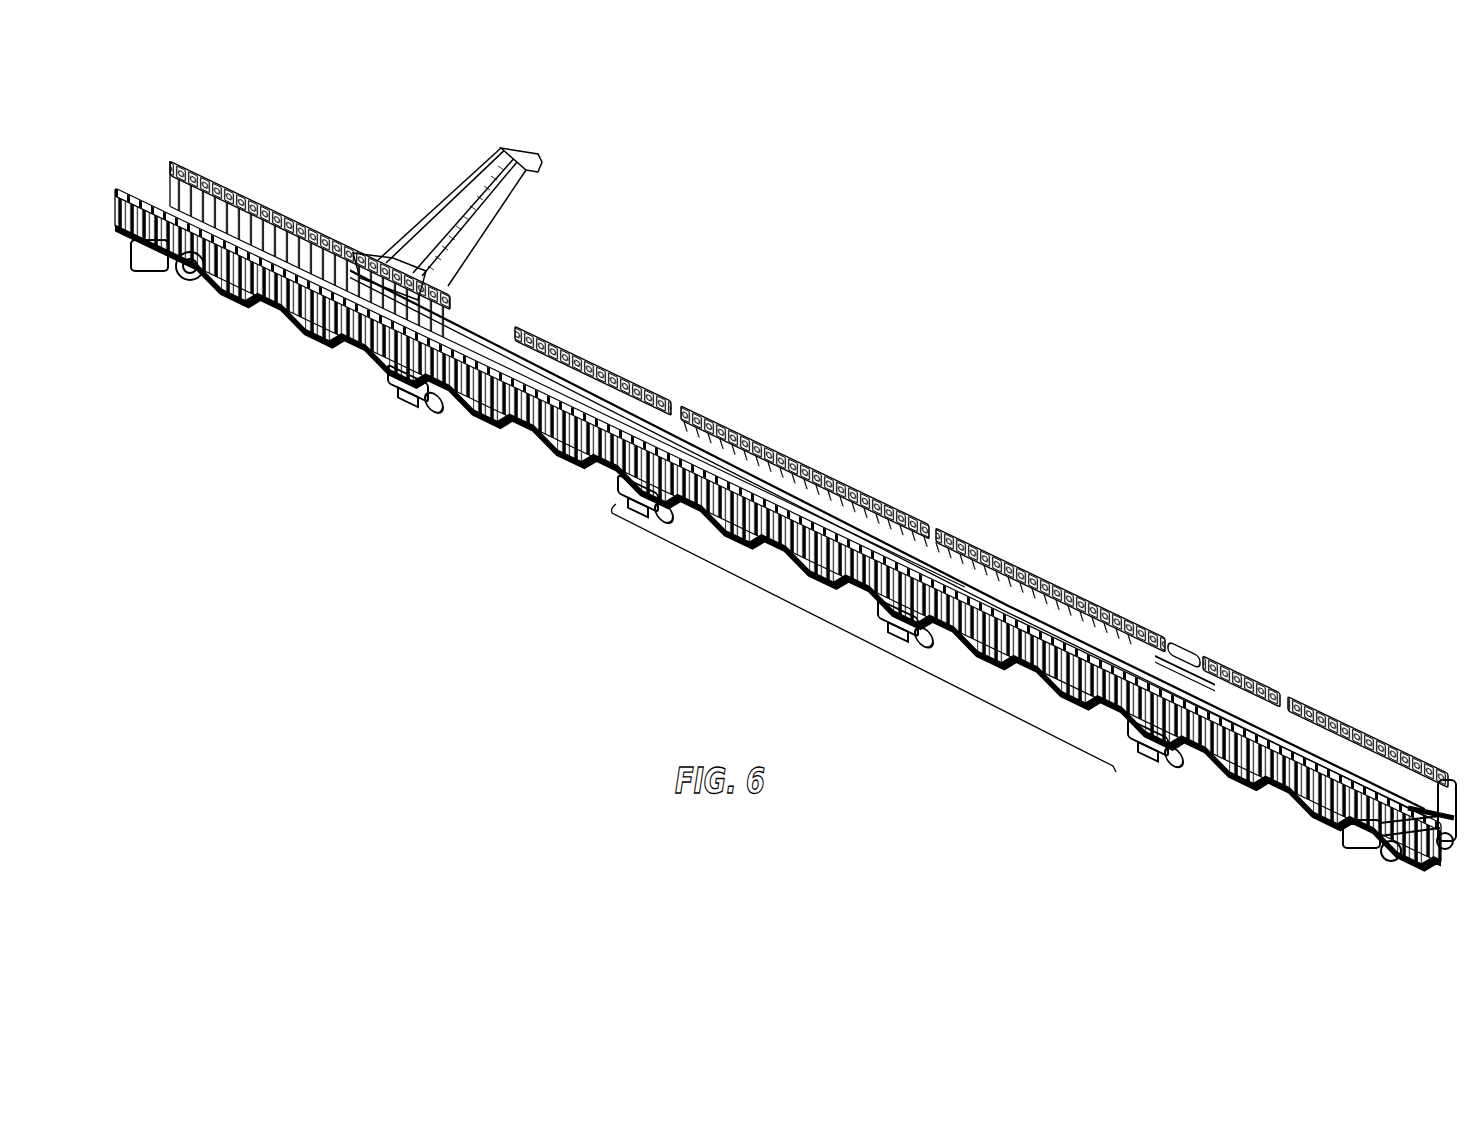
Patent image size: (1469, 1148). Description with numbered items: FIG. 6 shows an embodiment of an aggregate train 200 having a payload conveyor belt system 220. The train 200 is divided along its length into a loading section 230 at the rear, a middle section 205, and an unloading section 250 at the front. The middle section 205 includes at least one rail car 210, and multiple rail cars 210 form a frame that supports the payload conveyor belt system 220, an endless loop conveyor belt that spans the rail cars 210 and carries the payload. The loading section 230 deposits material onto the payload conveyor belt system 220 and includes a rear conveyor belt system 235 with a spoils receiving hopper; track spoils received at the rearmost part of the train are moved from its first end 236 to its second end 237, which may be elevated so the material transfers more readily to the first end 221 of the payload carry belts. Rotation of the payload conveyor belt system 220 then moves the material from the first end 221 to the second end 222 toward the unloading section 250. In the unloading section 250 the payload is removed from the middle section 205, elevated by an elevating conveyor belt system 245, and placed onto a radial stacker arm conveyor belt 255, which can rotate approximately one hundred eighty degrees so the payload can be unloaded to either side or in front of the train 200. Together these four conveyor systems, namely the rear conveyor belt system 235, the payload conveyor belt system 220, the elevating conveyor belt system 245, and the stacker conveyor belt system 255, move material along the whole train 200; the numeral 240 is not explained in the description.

The aggregate train 200 is at (1145, 370).
The middle section 205 is at (864, 638).
The rail car 210 is at (845, 484).
The payload conveyor belt system 220 is at (1035, 597).
The first end 221 is at (1180, 650).
The second end 222 is at (680, 403).
The loading section 230 is at (1230, 673).
The rear conveyor belt system 235 is at (1283, 697).
The first end 236 is at (1428, 775).
The second end 237 is at (1152, 632).
The rail segment 240 is at (630, 387).
The elevating conveyor belt system 245 is at (522, 332).
The unloading section 250 is at (303, 212).
The stacker arm conveyor belt 255 is at (527, 167).